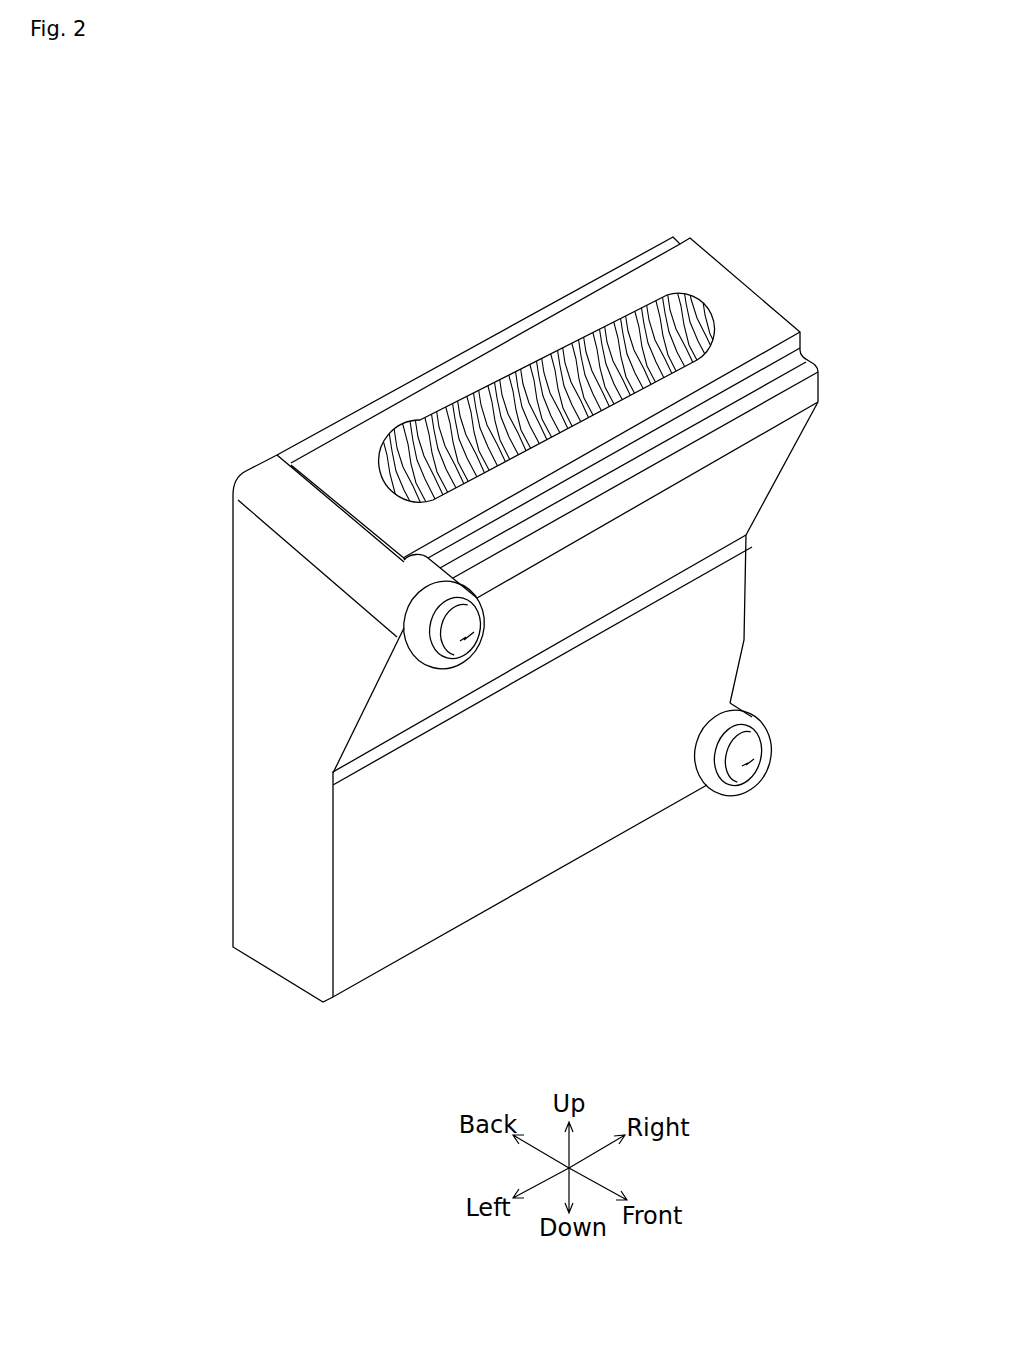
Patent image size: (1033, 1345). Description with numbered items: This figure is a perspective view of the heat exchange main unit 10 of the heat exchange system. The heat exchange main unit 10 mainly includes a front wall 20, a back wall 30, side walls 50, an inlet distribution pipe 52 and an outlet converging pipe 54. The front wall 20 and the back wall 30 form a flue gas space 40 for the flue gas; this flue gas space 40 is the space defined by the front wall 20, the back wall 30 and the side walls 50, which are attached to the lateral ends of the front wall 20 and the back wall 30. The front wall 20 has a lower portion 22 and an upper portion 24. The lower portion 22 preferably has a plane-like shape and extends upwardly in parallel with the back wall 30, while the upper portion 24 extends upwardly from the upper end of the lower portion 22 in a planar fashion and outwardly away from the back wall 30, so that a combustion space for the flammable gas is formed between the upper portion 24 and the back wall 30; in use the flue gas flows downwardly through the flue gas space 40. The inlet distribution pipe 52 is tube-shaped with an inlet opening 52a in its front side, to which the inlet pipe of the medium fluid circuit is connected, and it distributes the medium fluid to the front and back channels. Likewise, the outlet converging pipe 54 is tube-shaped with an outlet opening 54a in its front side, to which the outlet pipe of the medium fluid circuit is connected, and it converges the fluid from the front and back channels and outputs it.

The heat exchange main unit 10 is at (726, 194).
The front wall 20 is at (581, 884).
The lower portion 22 is at (488, 884).
The upper portion 24 is at (736, 519).
The back wall 30 is at (364, 391).
The flue gas space 40 is at (598, 354).
The side walls 50 is at (272, 940).
The inlet distribution pipe 52 is at (765, 709).
The inlet opening 52a is at (774, 760).
The outlet converging pipe 54 is at (401, 640).
The outlet opening 54a is at (480, 648).